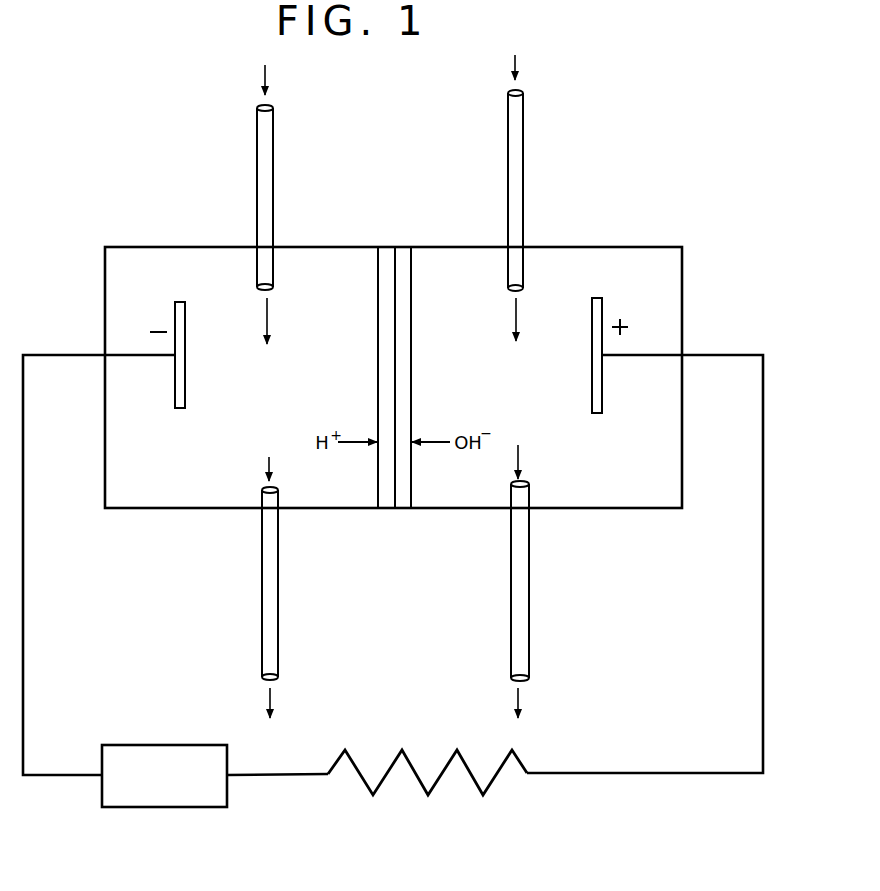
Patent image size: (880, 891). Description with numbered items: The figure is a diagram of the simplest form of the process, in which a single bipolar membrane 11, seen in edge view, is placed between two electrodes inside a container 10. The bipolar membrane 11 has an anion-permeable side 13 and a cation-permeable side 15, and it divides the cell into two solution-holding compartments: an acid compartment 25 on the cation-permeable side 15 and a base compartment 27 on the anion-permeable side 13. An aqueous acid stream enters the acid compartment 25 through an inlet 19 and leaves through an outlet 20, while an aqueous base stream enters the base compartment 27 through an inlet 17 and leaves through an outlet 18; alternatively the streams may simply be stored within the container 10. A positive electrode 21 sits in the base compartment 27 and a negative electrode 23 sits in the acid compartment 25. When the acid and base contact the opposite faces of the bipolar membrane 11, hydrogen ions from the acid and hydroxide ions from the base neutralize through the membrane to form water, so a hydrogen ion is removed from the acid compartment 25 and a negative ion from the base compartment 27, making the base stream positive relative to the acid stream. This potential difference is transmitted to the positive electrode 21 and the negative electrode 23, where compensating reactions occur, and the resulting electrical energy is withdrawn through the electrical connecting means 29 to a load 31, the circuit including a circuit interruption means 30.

The container 10 is at (628, 247).
The bipolar membrane 11 is at (391, 347).
The anion-permeable side 13 is at (411, 302).
The cation-permeable side 15 is at (378, 302).
The inlet 17 is at (518, 185).
The outlet 18 is at (522, 614).
The inlet 19 is at (262, 175).
The outlet 20 is at (262, 605).
The positive electrode 21 is at (602, 378).
The negative electrode 23 is at (175, 392).
The acid compartment 25 is at (281, 402).
The base compartment 27 is at (530, 402).
The electrical connecting means 29 is at (763, 615).
The circuit interruption means 30 is at (149, 797).
The load 31 is at (415, 775).